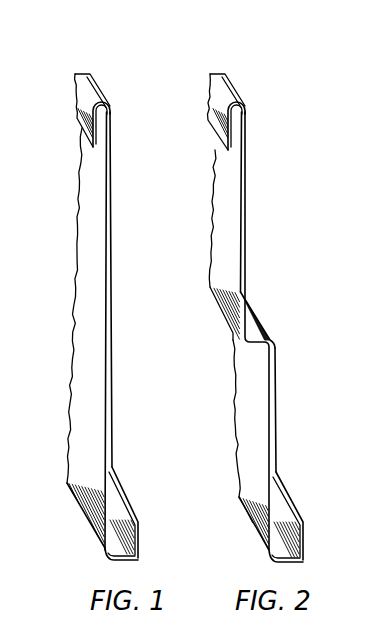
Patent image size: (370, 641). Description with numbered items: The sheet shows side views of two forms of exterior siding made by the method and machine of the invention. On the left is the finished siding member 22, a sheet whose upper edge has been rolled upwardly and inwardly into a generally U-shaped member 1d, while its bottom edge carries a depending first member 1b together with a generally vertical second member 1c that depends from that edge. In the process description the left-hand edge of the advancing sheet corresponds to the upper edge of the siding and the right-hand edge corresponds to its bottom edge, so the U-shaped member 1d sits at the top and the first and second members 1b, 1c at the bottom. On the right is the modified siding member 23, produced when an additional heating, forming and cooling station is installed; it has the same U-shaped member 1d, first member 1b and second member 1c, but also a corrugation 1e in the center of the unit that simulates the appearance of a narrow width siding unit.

In FIG. 1, the siding member 22 is at (100, 268).
In FIG. 2, the siding member 23 is at (230, 227).
In FIG. 1, the U-shaped member 1d is at (80, 100).
In FIG. 2, the U-shaped member 1d is at (212, 103).
In FIG. 2, the corrugation 1e is at (248, 313).
In FIG. 1, the first member 1b is at (142, 537).
In FIG. 2, the first member 1b is at (305, 537).
In FIG. 1, the second member 1c is at (120, 559).
In FIG. 2, the second member 1c is at (283, 561).